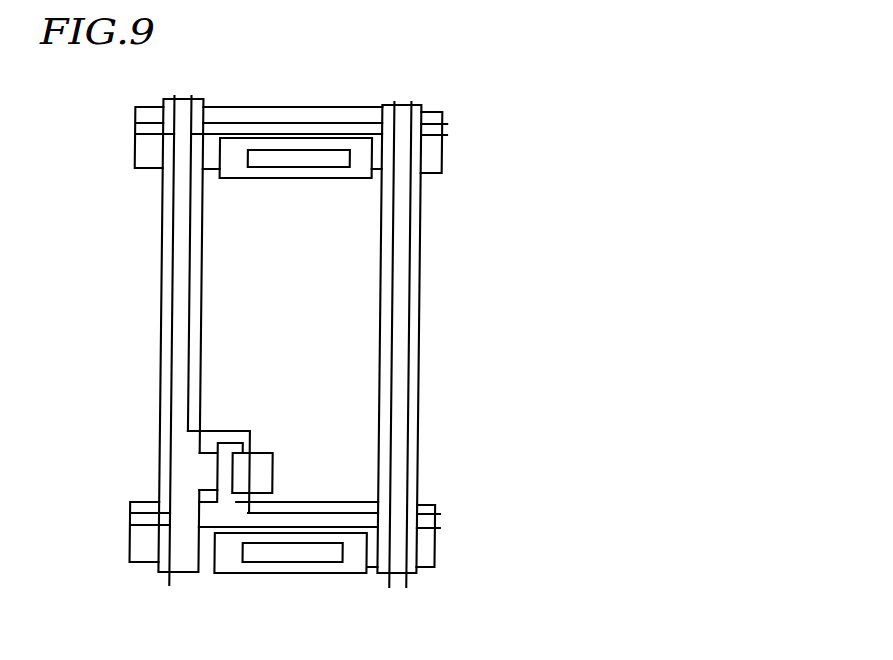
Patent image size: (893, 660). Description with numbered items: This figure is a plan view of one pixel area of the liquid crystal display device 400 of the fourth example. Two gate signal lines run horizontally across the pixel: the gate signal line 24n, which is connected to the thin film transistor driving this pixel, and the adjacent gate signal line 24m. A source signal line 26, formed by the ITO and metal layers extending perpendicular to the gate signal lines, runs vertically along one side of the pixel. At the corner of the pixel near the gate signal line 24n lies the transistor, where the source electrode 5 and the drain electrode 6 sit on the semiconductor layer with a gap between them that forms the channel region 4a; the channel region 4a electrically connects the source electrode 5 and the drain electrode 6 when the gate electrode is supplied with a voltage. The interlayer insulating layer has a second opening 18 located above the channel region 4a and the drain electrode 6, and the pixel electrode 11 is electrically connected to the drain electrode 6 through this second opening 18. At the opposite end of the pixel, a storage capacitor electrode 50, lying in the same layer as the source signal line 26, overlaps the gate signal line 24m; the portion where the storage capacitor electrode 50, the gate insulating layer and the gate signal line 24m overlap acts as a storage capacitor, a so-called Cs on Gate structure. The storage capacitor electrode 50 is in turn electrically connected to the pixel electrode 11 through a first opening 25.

The liquid crystal display device 400 is at (621, 71).
The source electrode 5 is at (210, 480).
The source signal line 26 is at (395, 567).
The gate signal line 24m is at (432, 150).
The gate signal line 24n is at (428, 547).
The pixel electrode 11 is at (360, 358).
The storage capacitor (Cs) electrode 50 is at (358, 173).
The first opening 25 is at (324, 157).
The second opening 18 is at (214, 465).
The channel region 4a is at (227, 490).
The drain electrode 6 is at (263, 482).